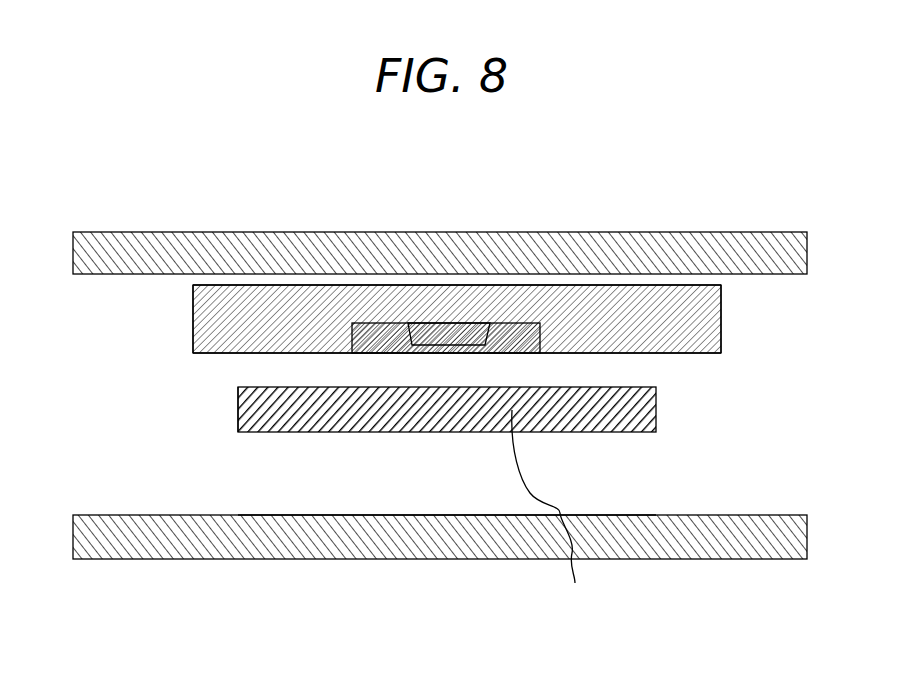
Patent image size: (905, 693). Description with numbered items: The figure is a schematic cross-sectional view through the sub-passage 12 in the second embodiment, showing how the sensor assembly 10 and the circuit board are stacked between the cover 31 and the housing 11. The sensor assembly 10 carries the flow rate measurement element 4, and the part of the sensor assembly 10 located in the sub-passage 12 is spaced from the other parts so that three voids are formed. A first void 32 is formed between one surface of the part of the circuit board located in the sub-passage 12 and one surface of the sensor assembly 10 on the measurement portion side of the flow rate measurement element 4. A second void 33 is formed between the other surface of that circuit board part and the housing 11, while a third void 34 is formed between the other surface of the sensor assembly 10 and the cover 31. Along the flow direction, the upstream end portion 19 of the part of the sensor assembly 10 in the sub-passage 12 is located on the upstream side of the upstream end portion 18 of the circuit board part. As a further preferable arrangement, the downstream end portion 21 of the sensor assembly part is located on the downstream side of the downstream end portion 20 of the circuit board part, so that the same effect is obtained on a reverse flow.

The flow rate measurement element 4 is at (520, 330).
The sensor assembly 10 is at (633, 322).
The housing 11 is at (612, 537).
The sub-passage 12 is at (107, 388).
The upstream end portion of the circuit board part 18 is at (238, 405).
The upstream end portion of the sensor assembly part 19 is at (193, 310).
The downstream end portion of the circuit board part 20 is at (656, 410).
The downstream end portion of the sensor assembly part 21 is at (721, 318).
The cover 31 is at (477, 253).
The first void 32 is at (323, 358).
The second void 33 is at (308, 480).
The third void 34 is at (349, 283).